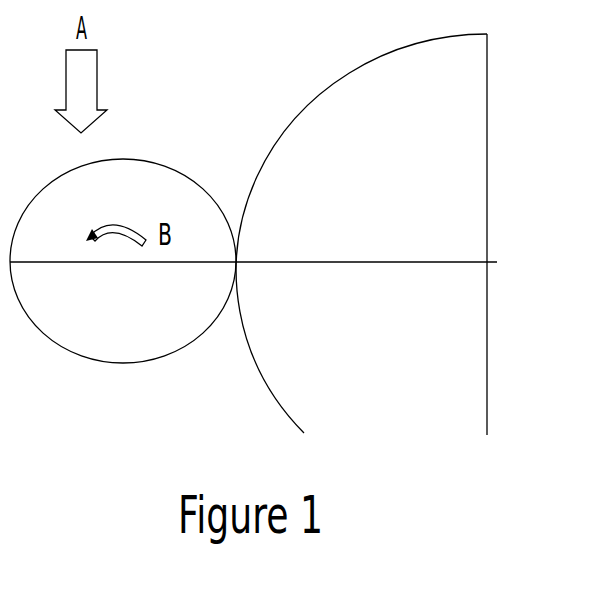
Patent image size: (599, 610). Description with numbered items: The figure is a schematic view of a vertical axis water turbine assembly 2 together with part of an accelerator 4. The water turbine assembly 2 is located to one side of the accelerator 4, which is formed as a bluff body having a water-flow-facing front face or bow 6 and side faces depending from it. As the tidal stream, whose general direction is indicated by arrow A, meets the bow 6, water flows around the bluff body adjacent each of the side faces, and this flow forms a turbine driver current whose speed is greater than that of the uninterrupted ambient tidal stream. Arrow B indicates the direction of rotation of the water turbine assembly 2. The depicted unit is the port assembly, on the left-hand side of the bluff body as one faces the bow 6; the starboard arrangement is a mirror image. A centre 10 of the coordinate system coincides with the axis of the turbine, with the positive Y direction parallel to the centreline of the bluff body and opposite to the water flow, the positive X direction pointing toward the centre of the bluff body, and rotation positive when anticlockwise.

The water turbine assembly 2 is at (89, 345).
The accelerator 4 is at (375, 339).
The bow 6 is at (404, 48).
The centre 10 is at (115, 263).